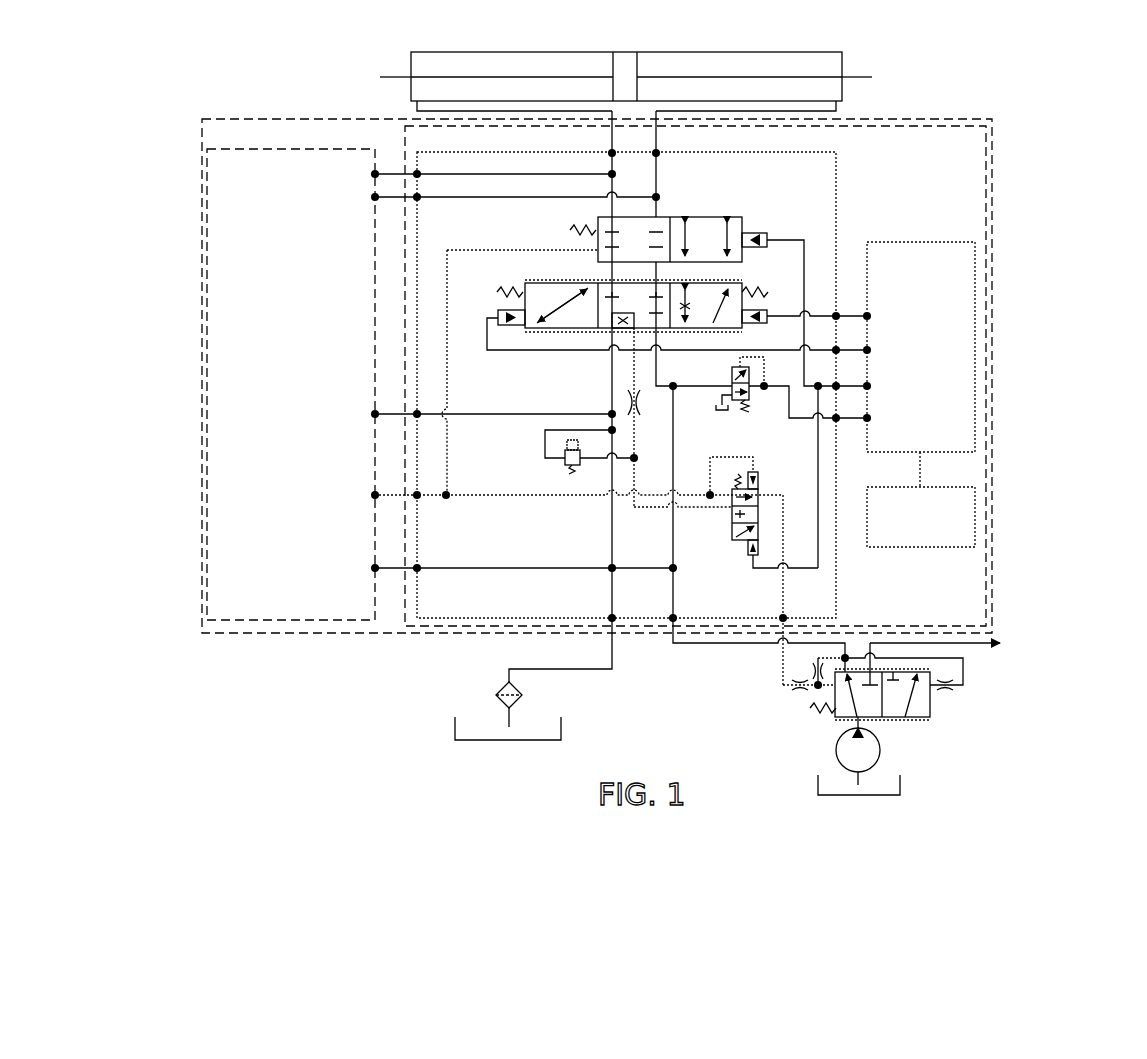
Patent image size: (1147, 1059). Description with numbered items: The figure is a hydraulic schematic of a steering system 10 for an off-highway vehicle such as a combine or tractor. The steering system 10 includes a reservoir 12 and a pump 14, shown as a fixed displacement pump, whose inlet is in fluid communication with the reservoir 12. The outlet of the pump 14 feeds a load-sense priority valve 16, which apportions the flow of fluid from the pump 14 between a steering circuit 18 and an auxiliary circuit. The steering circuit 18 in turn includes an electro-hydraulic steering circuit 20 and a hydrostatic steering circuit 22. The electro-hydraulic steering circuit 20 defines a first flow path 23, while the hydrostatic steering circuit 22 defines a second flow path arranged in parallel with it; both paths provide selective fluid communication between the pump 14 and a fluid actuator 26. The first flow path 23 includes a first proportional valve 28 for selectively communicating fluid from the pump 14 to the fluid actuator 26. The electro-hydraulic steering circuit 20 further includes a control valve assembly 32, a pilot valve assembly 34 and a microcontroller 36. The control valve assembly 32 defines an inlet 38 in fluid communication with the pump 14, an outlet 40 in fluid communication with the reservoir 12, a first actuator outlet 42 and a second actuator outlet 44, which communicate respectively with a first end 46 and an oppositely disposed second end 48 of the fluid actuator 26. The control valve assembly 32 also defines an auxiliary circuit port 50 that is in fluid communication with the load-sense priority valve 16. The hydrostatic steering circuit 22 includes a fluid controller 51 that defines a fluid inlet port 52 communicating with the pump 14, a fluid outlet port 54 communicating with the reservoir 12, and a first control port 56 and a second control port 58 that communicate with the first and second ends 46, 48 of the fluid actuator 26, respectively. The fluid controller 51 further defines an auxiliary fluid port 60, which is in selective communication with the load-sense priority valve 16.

The steering system 10 is at (1062, 178).
The reservoir 12 is at (485, 740).
The pump 14 is at (835, 745).
The load-sense priority valve 16 is at (930, 703).
The steering circuit 18 is at (316, 114).
The electro-hydraulic steering circuit 20 is at (405, 603).
The hydrostatic steering circuit 22 is at (270, 420).
The first flow path 23 is at (695, 425).
The fluid actuator 26 is at (625, 66).
The first proportional valve 28 is at (525, 277).
The control valve assembly 32 is at (482, 622).
The pilot valve assembly 34 is at (900, 242).
The microcontroller 36 is at (937, 548).
The inlet 38 is at (673, 618).
The outlet 40 is at (612, 618).
The first actuator outlet 42 is at (612, 153).
The second actuator outlet 44 is at (656, 153).
The first end 46 is at (411, 60).
The second end 48 is at (842, 62).
The auxiliary circuit port 50 is at (783, 618).
The fluid controller 51 is at (233, 620).
The fluid inlet port 52 is at (375, 568).
The fluid outlet port 54 is at (375, 414).
The first control port 56 is at (375, 174).
The second control port 58 is at (375, 197).
The auxiliary fluid port 60 is at (375, 495).